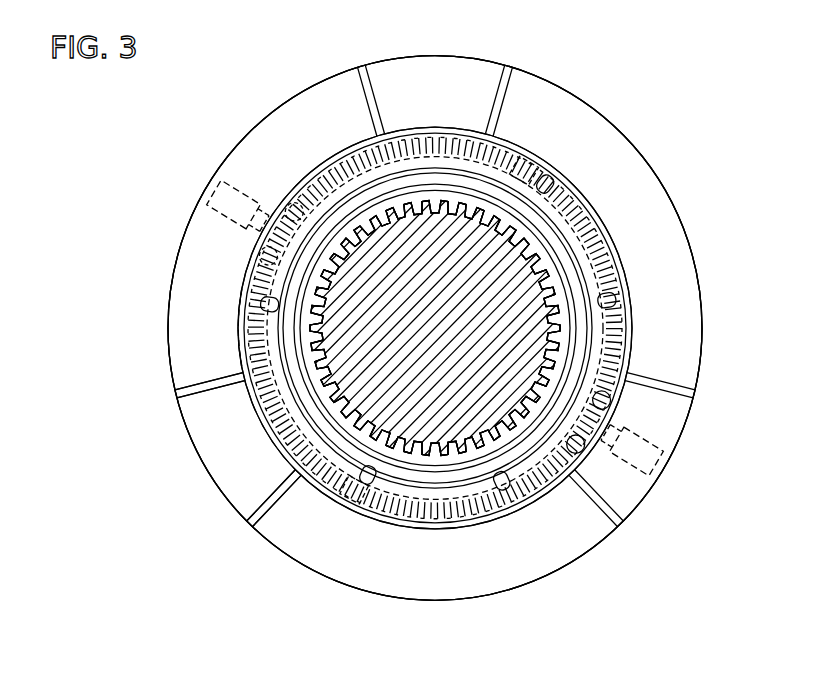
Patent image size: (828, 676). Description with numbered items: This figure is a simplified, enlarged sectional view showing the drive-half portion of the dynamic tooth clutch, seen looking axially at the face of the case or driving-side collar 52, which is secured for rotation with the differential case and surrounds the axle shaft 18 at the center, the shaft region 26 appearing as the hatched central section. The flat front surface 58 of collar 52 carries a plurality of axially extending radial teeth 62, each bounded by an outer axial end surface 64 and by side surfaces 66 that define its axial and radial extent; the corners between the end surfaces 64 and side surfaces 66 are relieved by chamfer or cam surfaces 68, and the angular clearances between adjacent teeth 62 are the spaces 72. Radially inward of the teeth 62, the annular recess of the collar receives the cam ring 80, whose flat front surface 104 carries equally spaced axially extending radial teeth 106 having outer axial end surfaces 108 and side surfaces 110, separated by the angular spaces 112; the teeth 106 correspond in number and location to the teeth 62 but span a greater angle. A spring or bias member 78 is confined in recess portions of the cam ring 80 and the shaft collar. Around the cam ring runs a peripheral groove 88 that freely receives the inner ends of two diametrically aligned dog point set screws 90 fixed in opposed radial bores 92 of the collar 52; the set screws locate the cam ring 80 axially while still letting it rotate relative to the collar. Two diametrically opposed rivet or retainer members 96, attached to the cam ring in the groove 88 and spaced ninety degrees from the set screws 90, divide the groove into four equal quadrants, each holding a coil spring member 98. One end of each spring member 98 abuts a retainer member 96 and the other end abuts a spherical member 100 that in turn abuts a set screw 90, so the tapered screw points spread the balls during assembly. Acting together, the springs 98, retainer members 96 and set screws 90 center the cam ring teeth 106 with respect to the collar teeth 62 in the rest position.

The axle shaft 18 is at (423, 358).
The gear 26 is at (452, 213).
The driving-side collar 52 is at (287, 571).
The flat front surface 58 is at (702, 308).
The radial teeth 62 is at (438, 66).
The outer axial end surfaces 64 is at (195, 418).
The side surfaces 66 is at (363, 78).
The chamfer or cam surfaces 68 is at (185, 388).
The angular spaces 72 is at (270, 122).
The spring or bias member 78 is at (565, 357).
The cam ring 80 is at (333, 190).
The peripheral groove 88 is at (245, 283).
The dog point set screws 90 is at (215, 185).
The radial bores 92 is at (215, 213).
The retainer members 96 is at (530, 160).
The spring members 98 is at (352, 158).
The spherical members 100 is at (290, 205).
The flat front surface 104 is at (553, 287).
The radial teeth 106 is at (428, 158).
The outer axial end surfaces 108 is at (370, 208).
The side surfaces 110 is at (555, 185).
The angular spaces 112 is at (322, 288).